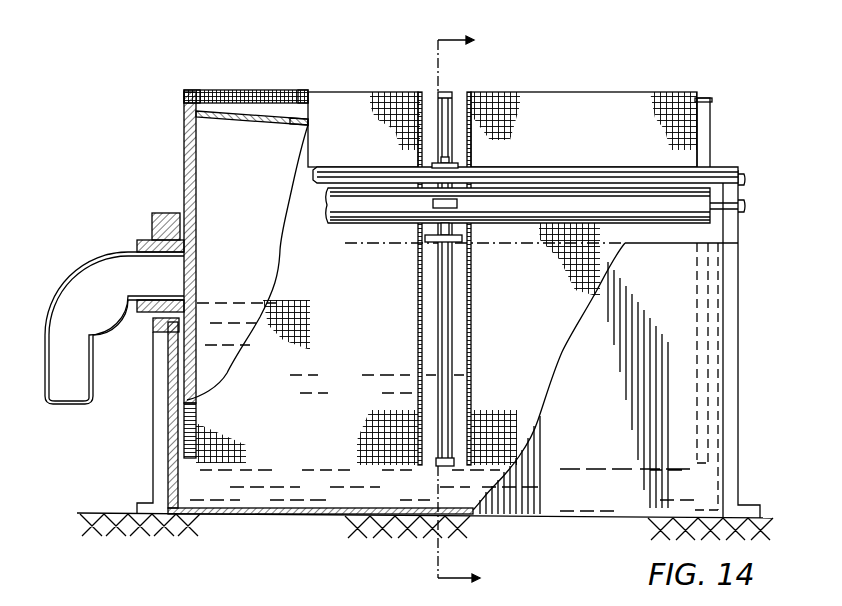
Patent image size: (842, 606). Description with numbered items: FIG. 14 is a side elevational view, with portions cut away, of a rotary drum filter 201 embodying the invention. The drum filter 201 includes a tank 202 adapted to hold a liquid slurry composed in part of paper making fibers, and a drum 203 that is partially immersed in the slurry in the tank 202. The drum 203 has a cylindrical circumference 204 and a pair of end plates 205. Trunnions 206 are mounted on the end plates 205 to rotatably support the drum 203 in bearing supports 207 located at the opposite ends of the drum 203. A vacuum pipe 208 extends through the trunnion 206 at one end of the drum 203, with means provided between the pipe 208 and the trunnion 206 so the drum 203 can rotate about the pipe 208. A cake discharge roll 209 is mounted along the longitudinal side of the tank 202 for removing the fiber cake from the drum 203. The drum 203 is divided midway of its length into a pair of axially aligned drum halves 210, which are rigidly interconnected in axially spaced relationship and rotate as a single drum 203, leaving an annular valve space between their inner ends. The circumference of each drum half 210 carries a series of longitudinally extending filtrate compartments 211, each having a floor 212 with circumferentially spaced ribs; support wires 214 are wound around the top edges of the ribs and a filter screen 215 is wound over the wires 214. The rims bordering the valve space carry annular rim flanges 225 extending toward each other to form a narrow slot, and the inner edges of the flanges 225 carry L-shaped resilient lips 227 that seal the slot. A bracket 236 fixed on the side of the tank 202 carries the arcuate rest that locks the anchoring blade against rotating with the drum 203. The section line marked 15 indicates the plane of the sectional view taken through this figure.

The drum filter 201 is at (170, 129).
The tank 202 is at (173, 464).
The drum 203 is at (622, 80).
The cylindrical circumference 204 is at (282, 68).
The end plates 205 is at (188, 184).
The trunnions 206 is at (152, 240).
The bearing supports 207 is at (157, 326).
The vacuum pipe 208 is at (112, 430).
The cake discharge roll 209 is at (530, 222).
The drum halves 210 is at (359, 103).
The filtrate compartments 211 is at (240, 114).
The floor 212 is at (300, 127).
The support wires 214 is at (222, 92).
The filter screen 215 is at (303, 92).
The rim flange 225 is at (490, 315).
The resilient lips 227 is at (447, 386).
The bracket 236 is at (455, 167).
The section line 15- 15 is at (471, 311).